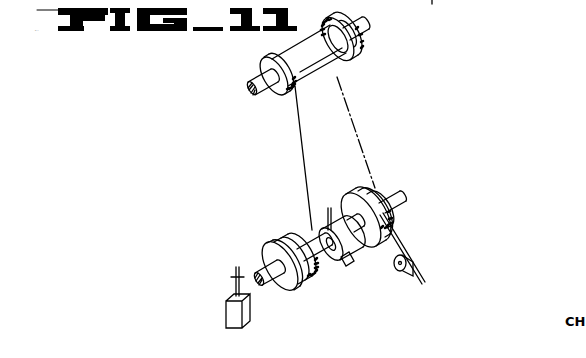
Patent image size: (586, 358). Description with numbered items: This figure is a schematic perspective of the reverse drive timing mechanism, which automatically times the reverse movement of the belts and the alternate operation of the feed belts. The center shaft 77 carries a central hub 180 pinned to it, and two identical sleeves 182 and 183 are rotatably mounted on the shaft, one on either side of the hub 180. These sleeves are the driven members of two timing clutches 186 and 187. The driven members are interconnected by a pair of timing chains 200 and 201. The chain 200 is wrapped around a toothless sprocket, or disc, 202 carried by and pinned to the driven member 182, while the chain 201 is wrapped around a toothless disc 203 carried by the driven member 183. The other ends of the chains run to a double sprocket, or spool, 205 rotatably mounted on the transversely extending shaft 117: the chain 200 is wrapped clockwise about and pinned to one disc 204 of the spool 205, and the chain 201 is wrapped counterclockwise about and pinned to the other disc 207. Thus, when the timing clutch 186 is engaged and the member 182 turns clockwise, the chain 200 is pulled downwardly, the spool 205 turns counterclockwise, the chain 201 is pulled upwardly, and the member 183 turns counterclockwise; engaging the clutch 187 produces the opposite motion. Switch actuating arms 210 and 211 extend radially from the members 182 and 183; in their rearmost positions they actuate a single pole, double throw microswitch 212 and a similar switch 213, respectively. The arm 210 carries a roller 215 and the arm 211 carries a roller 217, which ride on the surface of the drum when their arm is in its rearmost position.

The center shaft 77 is at (409, 196).
The transversely extending shaft 117 is at (254, 86).
The central hub 180 is at (352, 260).
The sleeve 182 is at (392, 214).
The sleeve 183 is at (311, 277).
The clutch 186 is at (398, 176).
The clutch 187 is at (272, 229).
The timing chain 200 is at (363, 146).
The timing chain 201 is at (301, 122).
The toothless sprocket 202 is at (398, 222).
The toothless sprocket 203 is at (292, 236).
The toothless sprocket 204 is at (352, 46).
The double sprocket 205 is at (342, 73).
The toothless sprocket 207 is at (266, 60).
The switch actuating arm 210 is at (407, 241).
The switch actuating arm 211 is at (257, 272).
The microswitch 212 is at (347, 267).
The switch 213 is at (227, 309).
The roller 215 is at (413, 264).
The roller 217 is at (258, 266).